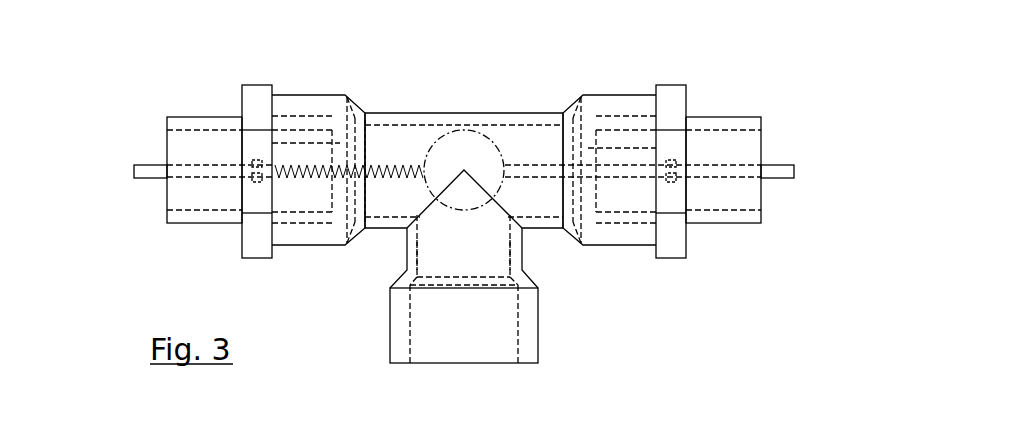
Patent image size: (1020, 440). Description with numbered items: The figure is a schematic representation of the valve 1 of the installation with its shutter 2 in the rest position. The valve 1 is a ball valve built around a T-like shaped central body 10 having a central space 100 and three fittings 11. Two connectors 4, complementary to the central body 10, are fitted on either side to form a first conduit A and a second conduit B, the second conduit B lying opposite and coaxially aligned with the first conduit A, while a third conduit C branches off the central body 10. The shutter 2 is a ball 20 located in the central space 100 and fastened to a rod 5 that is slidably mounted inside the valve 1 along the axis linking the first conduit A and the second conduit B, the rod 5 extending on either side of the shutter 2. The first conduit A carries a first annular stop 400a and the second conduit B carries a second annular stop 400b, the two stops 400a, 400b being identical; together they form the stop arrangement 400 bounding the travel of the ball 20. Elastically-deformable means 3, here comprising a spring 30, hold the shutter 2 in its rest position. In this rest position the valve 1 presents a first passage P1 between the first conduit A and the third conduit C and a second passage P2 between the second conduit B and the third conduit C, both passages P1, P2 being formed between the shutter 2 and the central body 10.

The valve 1 is at (466, 40).
The shutter 2 is at (427, 128).
The elastically-deformable means 3 is at (375, 191).
The connector 4 is at (210, 233).
The rod 5 is at (155, 170).
The central body 10 is at (507, 110).
The fitting 11 is at (307, 108).
The ball 20 is at (464, 140).
The spring 30 is at (322, 180).
The central space 100 is at (540, 142).
The coupling nut 400 is at (464, 129).
The first annular stop 400a is at (340, 143).
The second annular stop 400b is at (590, 148).
The first passage P1 is at (438, 229).
The second passage P2 is at (490, 229).
The first conduit A is at (119, 208).
The second conduit B is at (813, 210).
The third conduit C is at (467, 398).